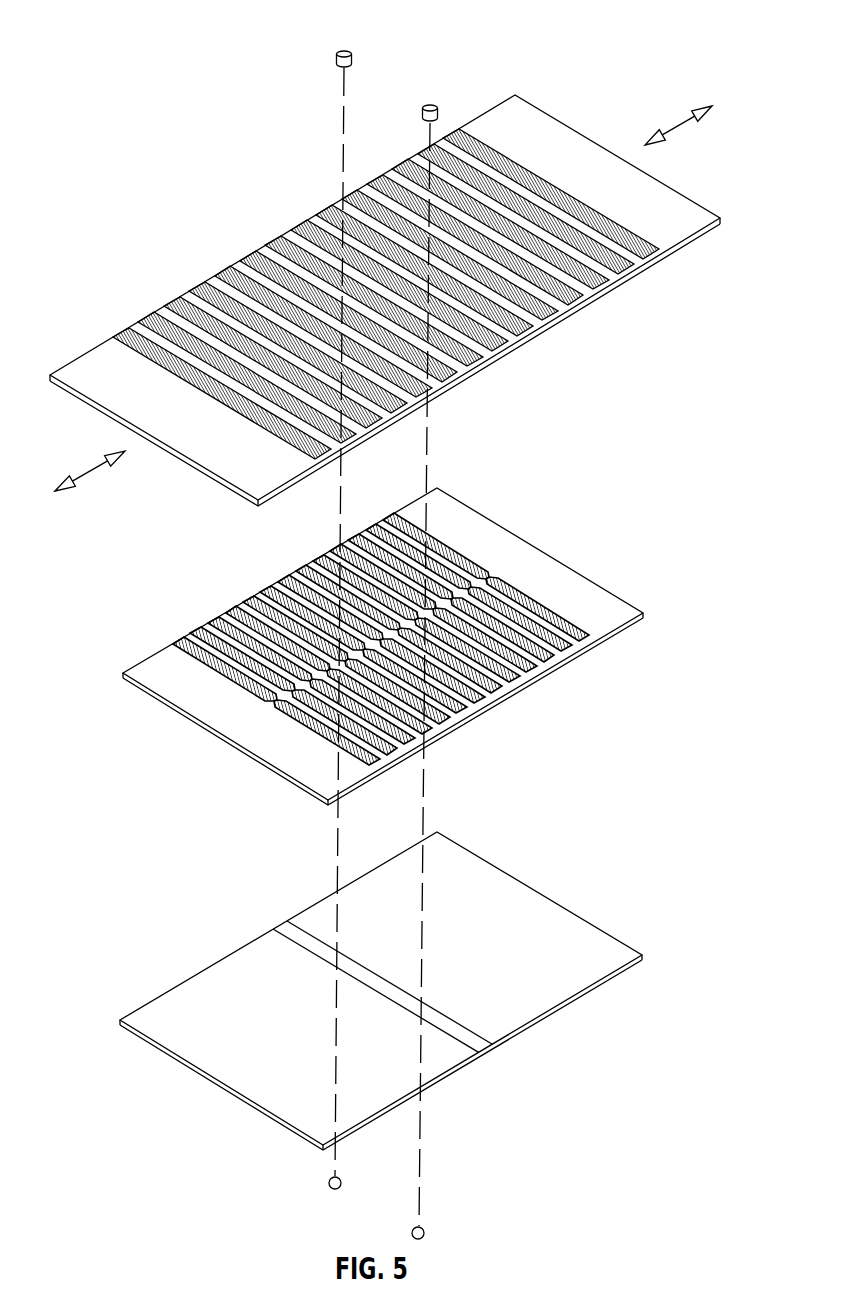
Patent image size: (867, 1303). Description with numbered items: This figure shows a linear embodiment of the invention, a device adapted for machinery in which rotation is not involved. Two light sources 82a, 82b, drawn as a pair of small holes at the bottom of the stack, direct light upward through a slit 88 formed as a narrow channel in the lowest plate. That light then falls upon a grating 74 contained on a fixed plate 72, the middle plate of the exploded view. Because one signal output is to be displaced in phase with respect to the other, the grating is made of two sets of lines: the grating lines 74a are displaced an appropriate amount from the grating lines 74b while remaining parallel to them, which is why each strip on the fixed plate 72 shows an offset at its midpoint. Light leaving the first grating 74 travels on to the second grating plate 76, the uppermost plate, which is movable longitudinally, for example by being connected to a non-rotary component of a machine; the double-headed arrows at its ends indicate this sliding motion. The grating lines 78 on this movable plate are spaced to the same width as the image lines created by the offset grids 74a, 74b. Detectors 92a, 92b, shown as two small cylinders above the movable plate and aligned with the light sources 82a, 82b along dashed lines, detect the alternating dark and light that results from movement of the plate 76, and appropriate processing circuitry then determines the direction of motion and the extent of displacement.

The fixed plate 72 is at (150, 665).
The grating 74 is at (381, 631).
The grating lines 74a is at (270, 596).
The grating lines 74b is at (476, 710).
The second grating plate 76 is at (565, 130).
The grating lines 78 is at (553, 321).
The light source 82a is at (329, 1183).
The light source 82b is at (424, 1228).
The slit 88 is at (481, 1052).
The detector 92a is at (340, 50).
The detector 92b is at (434, 100).